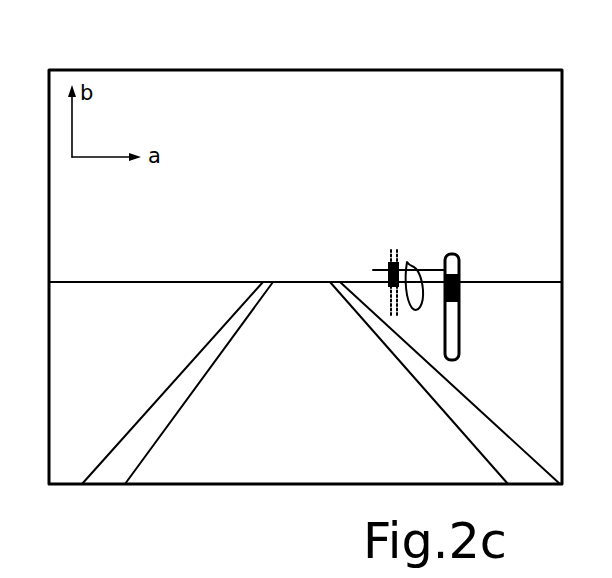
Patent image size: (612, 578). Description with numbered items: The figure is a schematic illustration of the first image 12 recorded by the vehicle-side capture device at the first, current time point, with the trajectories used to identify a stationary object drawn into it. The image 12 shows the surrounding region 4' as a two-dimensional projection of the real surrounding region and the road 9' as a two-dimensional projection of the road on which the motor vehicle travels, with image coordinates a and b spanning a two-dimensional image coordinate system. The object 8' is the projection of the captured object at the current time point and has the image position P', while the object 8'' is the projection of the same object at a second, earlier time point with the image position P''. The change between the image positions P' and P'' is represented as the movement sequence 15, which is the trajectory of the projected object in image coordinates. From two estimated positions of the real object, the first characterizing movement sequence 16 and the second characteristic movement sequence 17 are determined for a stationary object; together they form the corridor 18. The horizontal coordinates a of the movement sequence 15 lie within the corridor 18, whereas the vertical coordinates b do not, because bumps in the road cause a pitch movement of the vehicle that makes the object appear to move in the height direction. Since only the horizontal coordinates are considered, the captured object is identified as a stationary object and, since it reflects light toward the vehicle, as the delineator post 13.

The image 12 is at (207, 70).
The surrounding region 4' is at (321, 303).
The road 9' is at (195, 339).
The delineator post 13 is at (472, 322).
The image position P' is at (496, 300).
The object 8' is at (486, 241).
The object 8'' is at (369, 256).
The image position P'' is at (403, 210).
The movement sequence 15 is at (407, 262).
The corridor 18 is at (421, 263).
The first characterizing movement sequence 16 is at (380, 265).
The second characteristic movement sequence 17 is at (427, 312).